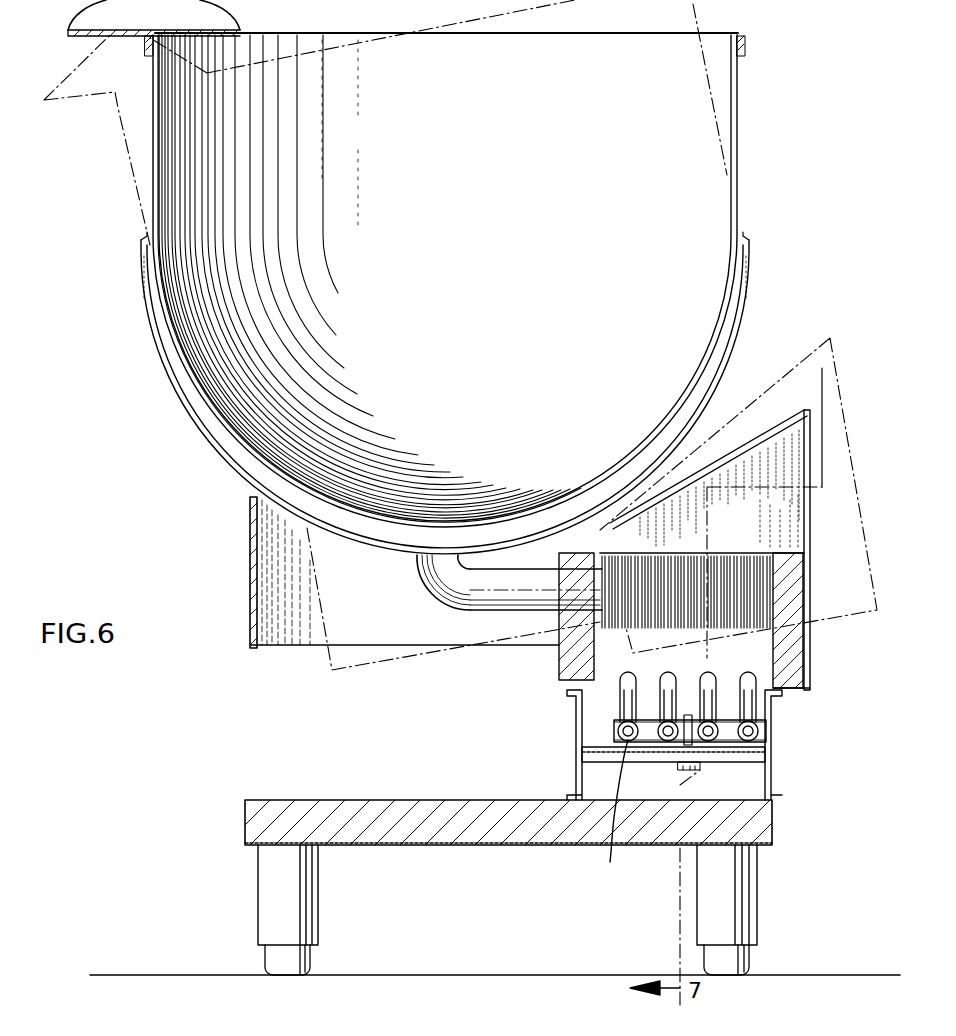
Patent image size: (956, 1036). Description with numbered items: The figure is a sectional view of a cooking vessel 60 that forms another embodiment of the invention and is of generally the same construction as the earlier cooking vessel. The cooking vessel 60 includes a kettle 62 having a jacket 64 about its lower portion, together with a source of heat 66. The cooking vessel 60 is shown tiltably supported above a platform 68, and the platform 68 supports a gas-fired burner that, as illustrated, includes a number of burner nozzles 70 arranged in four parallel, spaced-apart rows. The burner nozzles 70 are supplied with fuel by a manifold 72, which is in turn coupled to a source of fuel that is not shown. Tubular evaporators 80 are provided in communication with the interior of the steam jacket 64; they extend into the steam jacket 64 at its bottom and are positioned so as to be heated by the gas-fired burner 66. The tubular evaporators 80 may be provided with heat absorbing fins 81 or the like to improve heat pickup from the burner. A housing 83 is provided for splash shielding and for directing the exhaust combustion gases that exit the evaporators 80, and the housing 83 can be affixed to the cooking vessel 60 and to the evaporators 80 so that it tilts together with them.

The cooking vessel 60 is at (800, 158).
The kettle 62 is at (734, 125).
The jacket 64 is at (750, 306).
The source of heat 66 is at (560, 697).
The platform 68 is at (528, 847).
The burner nozzles 70 is at (628, 692).
The manifold 72 is at (621, 814).
The tubular evaporators 80 is at (458, 596).
The heat absorbing fins 81 is at (765, 620).
The housing 83 is at (808, 410).